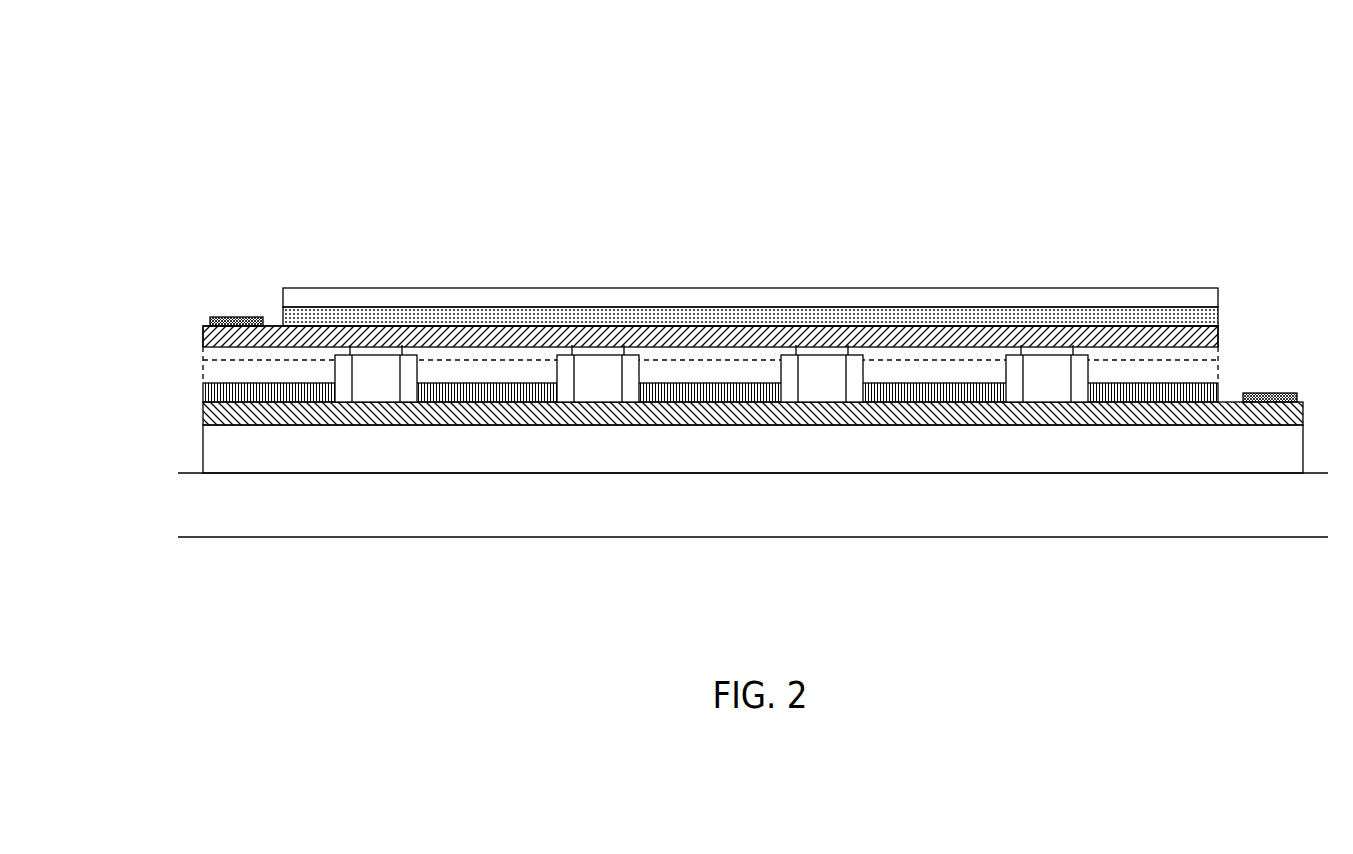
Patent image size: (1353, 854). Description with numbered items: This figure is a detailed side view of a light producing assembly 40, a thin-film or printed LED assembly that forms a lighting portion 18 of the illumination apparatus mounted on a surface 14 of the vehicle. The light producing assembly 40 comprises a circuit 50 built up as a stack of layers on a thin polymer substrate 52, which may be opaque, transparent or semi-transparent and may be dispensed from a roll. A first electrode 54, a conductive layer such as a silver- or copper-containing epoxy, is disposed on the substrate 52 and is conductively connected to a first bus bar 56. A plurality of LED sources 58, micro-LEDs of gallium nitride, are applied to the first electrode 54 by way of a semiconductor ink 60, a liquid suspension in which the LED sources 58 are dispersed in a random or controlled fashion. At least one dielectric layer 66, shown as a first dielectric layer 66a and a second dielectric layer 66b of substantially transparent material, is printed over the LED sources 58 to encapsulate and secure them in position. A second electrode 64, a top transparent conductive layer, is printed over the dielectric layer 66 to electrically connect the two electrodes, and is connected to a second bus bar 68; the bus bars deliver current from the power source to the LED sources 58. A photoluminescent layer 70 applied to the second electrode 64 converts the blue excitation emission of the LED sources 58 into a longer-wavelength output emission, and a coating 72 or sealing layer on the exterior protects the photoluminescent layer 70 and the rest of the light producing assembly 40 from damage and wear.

The surface 14 is at (343, 473).
The lighting portion 18 is at (999, 108).
The light producing assembly 40 is at (711, 383).
The circuit 50 is at (1257, 229).
The substrate 52 is at (203, 458).
The first electrode 54 is at (203, 412).
The first bus bar 56 is at (1270, 393).
The LED sources 58 is at (600, 349).
The semiconductor ink 60 is at (203, 394).
The second electrode 64 is at (204, 331).
The dielectric layer 66 is at (1222, 385).
The first dielectric layer 66a is at (203, 375).
The second dielectric layer 66b is at (203, 350).
The second bus bar 68 is at (240, 317).
The photoluminescent layer 70 is at (1220, 318).
The coating 72 is at (342, 294).